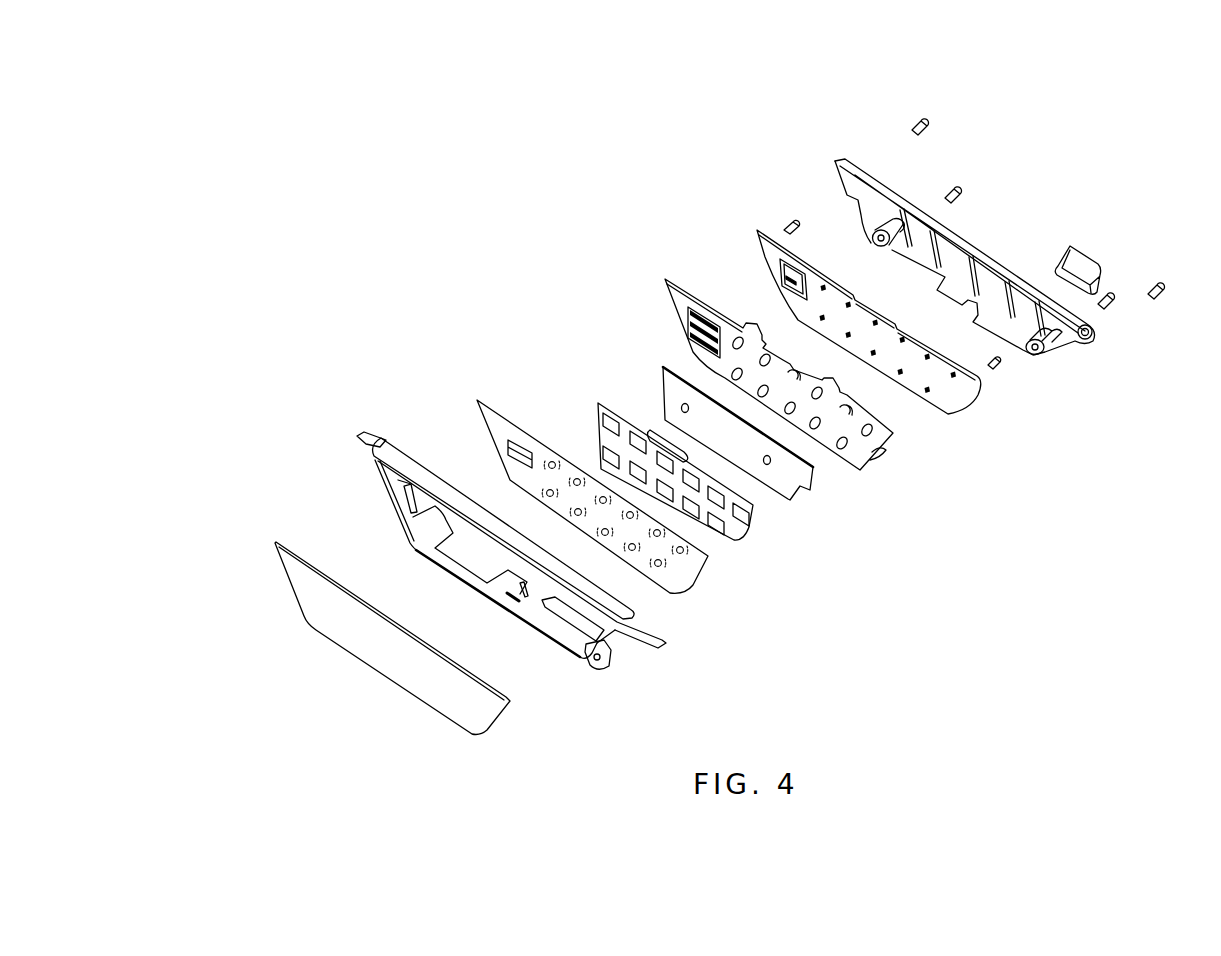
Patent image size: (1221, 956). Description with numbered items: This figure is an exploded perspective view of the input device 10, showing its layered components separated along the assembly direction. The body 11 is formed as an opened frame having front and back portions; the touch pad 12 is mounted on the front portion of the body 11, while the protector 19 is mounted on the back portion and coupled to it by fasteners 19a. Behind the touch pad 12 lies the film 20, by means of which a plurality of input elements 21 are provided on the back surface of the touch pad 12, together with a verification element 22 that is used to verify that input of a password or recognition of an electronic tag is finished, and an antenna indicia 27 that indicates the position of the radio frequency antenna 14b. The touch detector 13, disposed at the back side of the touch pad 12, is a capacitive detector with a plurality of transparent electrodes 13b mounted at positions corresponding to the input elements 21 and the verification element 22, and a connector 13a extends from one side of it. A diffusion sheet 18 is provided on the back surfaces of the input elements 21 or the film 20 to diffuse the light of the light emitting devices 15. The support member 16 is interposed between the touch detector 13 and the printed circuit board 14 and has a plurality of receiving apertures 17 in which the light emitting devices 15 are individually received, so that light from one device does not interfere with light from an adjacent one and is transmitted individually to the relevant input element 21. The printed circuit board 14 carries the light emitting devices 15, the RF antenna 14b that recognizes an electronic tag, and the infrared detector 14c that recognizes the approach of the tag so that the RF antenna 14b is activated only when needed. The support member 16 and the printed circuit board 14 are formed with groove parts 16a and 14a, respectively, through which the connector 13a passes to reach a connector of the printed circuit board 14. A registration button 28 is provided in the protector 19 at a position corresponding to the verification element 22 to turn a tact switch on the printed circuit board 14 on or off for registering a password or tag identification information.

The input device 10 is at (411, 272).
The body 11 is at (477, 584).
The touch pad 12 is at (300, 584).
The touch detector 13 is at (726, 458).
The connector 13a is at (653, 430).
The electrodes 13b is at (722, 489).
The printed circuit board 14 is at (870, 318).
The groove part 14a is at (890, 319).
The radio frequency antenna 14b is at (767, 250).
The infrared detector 14c is at (785, 272).
The light emitting devices 15 is at (927, 397).
The support member 16 is at (798, 383).
The groove part 16a is at (775, 360).
The receiving apertures 17 is at (797, 373).
The diffusion sheet 18 is at (668, 370).
The protector 19 is at (1013, 211).
The fasteners 19a is at (918, 115).
The film 20 is at (593, 515).
The input elements 21 is at (552, 458).
The verification element 22 is at (680, 552).
The antenna indicia 27 is at (508, 452).
The registration button 28 is at (1097, 263).